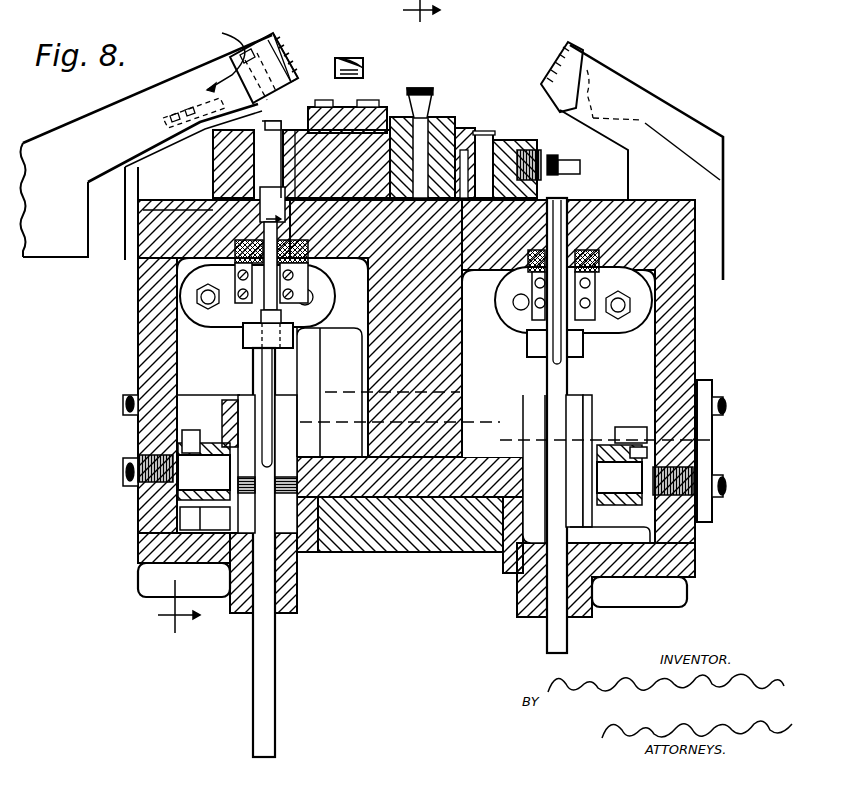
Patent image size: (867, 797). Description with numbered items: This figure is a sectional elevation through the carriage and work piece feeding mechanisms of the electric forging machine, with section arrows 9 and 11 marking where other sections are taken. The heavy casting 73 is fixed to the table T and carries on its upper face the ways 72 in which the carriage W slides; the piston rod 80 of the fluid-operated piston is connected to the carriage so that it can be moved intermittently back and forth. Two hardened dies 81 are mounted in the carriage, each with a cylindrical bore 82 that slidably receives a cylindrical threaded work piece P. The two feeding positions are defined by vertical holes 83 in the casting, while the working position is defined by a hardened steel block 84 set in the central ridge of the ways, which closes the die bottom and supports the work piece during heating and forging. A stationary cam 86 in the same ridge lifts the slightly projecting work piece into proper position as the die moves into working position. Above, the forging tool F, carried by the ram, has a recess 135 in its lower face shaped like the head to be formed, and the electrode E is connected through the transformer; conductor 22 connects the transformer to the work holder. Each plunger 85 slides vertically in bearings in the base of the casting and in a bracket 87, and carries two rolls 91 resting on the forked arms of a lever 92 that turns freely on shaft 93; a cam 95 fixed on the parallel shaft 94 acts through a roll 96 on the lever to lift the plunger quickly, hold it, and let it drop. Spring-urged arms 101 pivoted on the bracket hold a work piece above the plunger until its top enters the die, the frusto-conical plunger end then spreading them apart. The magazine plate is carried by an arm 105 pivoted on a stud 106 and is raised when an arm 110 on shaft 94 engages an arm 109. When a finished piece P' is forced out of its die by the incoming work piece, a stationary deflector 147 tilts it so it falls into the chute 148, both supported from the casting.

The section line 9 is at (221, 423).
The direction arrow 11 is at (420, 23).
The electric conductor 22 is at (310, 130).
The ways 72 is at (410, 125).
The casting 73 is at (140, 310).
The piston rod 80 is at (570, 160).
The hardened die 81 is at (268, 155).
The cylindrical bore 82 is at (262, 165).
The vertical hole 83 is at (230, 200).
The hardened steel block 84 is at (486, 134).
The plunger 85 is at (262, 360).
The stationary cam 86 is at (282, 132).
The bracket 87 is at (243, 332).
The roll 91 is at (530, 392).
The lever 92 is at (545, 405).
The shaft 93 is at (122, 400).
The shaft 94 is at (122, 475).
The cam 95 is at (178, 535).
The roll 96 is at (595, 392).
The arm 101 is at (242, 270).
The arm 105 is at (225, 418).
The stud 106 is at (715, 505).
The arm 109 is at (182, 432).
The arm 110 is at (195, 517).
The recess 135 is at (348, 58).
The stationary deflector 147 is at (276, 65).
The chute 148 is at (148, 142).
The work piece P is at (388, 181).
The finished work piece P' is at (328, 108).
The carriage W is at (424, 130).
The electrode E is at (428, 90).
The forging tool F is at (363, 65).
The table T is at (430, 535).